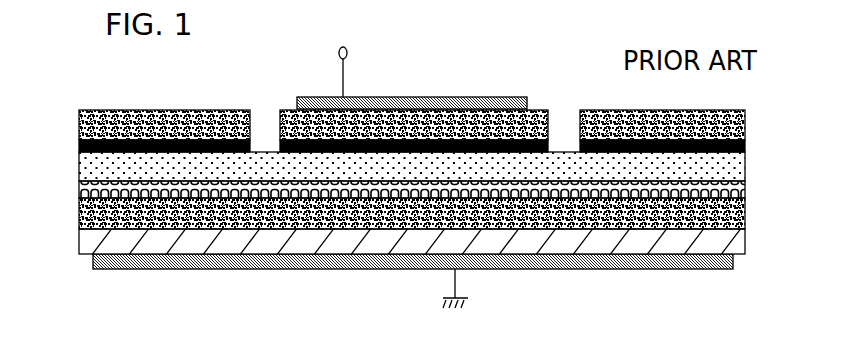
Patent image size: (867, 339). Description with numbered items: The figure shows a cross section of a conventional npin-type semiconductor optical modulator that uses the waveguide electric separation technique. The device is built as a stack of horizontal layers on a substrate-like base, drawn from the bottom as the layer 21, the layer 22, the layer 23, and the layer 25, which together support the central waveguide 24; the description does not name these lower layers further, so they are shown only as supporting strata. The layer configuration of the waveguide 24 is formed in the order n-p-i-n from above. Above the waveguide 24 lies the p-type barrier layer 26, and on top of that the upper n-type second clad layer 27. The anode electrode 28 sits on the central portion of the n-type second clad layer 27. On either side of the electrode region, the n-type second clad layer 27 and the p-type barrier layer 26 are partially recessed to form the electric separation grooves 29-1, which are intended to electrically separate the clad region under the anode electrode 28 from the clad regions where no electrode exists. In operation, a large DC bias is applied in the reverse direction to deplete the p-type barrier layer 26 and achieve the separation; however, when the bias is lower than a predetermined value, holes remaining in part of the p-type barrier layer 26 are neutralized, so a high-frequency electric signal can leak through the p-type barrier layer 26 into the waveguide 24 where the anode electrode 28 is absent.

The back gate electrode 21 is at (189, 269).
The substrate 22 is at (79, 240).
The buffer layer 23 is at (79, 213).
The waveguide 24 is at (79, 190).
The barrier layer 25 is at (79, 164).
The p-type barrier layer 26 is at (79, 147).
The n-type second clad layer 27 is at (79, 122).
The anode electrode 28 is at (400, 97).
The electric separation groove 29-1 is at (277, 118).